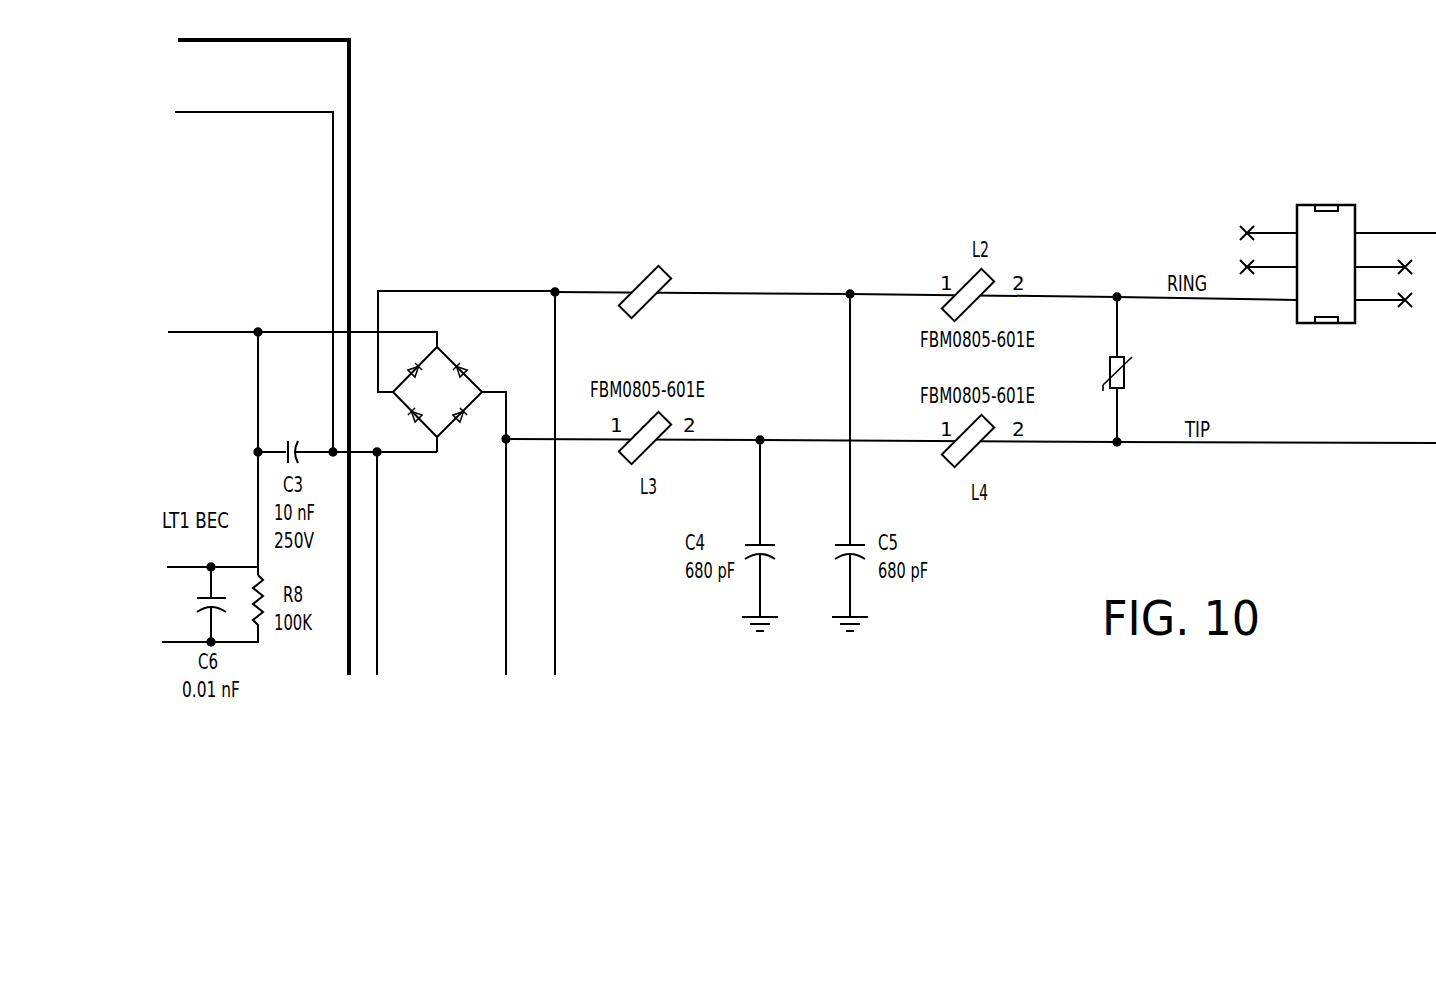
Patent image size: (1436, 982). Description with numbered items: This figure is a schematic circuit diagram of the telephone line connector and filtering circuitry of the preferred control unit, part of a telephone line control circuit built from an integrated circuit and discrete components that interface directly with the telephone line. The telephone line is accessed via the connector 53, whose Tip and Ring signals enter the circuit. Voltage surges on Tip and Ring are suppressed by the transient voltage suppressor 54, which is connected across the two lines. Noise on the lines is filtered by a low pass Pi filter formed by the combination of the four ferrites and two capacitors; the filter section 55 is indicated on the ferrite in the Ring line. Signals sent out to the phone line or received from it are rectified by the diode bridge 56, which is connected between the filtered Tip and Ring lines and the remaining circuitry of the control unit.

The connector 53 is at (1268, 210).
The transient voltage suppressor 54 is at (1107, 350).
The ferrite bead filter 55 is at (742, 282).
The diode bridge 56 is at (434, 311).